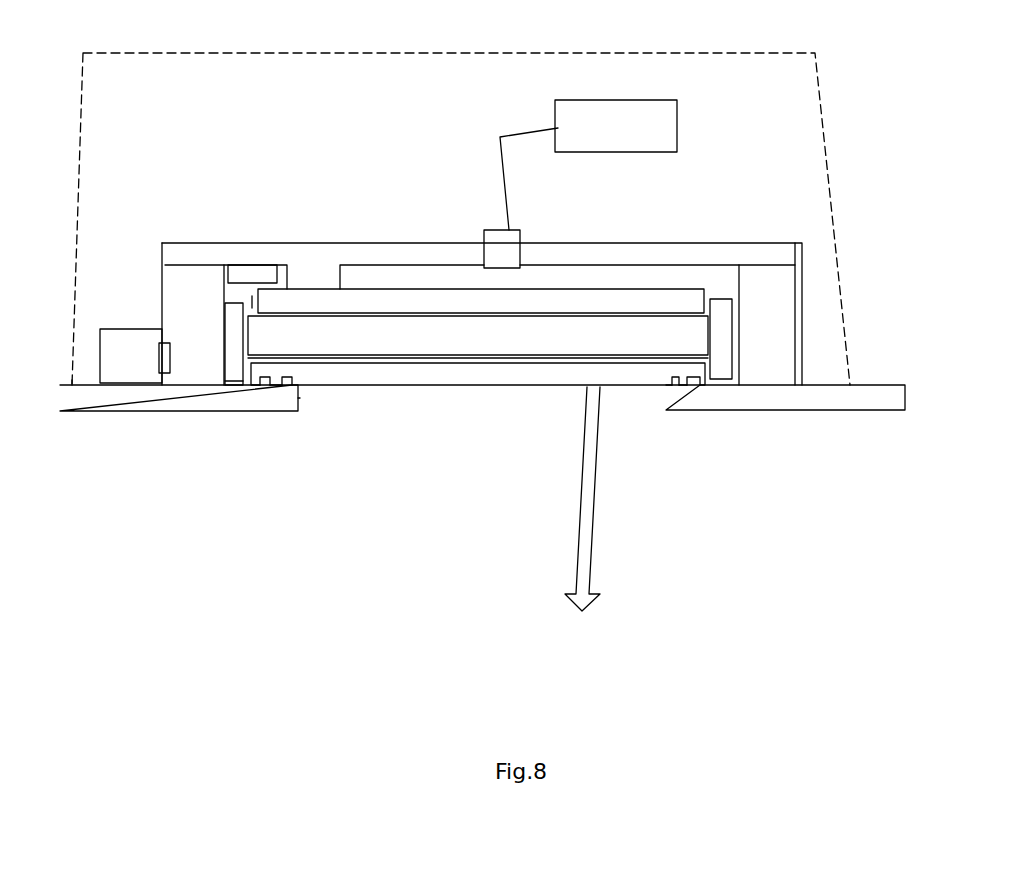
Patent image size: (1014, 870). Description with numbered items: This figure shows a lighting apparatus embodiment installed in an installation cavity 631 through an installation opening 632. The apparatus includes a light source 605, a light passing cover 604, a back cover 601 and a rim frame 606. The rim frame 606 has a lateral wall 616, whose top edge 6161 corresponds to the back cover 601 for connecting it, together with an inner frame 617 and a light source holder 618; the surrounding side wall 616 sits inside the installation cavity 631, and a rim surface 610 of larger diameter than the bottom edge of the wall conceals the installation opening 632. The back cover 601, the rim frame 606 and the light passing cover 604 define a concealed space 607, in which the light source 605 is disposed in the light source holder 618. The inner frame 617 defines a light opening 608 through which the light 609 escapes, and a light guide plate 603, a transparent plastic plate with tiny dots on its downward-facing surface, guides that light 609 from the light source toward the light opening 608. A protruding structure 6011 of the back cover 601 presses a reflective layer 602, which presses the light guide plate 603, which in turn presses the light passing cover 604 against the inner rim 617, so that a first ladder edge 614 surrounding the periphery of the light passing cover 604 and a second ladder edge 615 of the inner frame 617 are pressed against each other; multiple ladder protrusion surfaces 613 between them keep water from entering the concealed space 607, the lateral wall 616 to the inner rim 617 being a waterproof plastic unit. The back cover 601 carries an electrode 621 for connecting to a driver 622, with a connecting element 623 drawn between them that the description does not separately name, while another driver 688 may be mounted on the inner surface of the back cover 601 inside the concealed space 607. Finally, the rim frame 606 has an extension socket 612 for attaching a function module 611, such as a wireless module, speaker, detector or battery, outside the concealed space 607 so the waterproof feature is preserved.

The installation cavity 631 is at (145, 87).
The installation opening 632 is at (90, 374).
The back cover 601 is at (258, 250).
The protruding structure 6011 is at (332, 273).
The driver 688 is at (245, 278).
The top edge 6161 is at (802, 250).
The rim frame 606 is at (792, 325).
The reflective layer 602 is at (600, 305).
The concealed space 607 is at (252, 302).
The light guide plate 603 is at (643, 335).
The light passing cover 604 is at (493, 375).
The light source 605 is at (233, 348).
The light source holder 618 is at (237, 378).
The extension socket 612 is at (182, 321).
The function module 611 is at (138, 367).
The rim surface 610 is at (85, 398).
The inner frame 617 is at (287, 405).
The light opening 608 is at (357, 400).
The lateral wall 616 is at (792, 363).
The ladder protrusion surfaces 613 is at (680, 385).
The second ladder edge 615 is at (697, 388).
The first ladder edge 614 is at (685, 380).
The electrode 621 is at (490, 242).
The driver 622 is at (677, 133).
The wire 623 is at (517, 139).
The light 609 is at (585, 545).